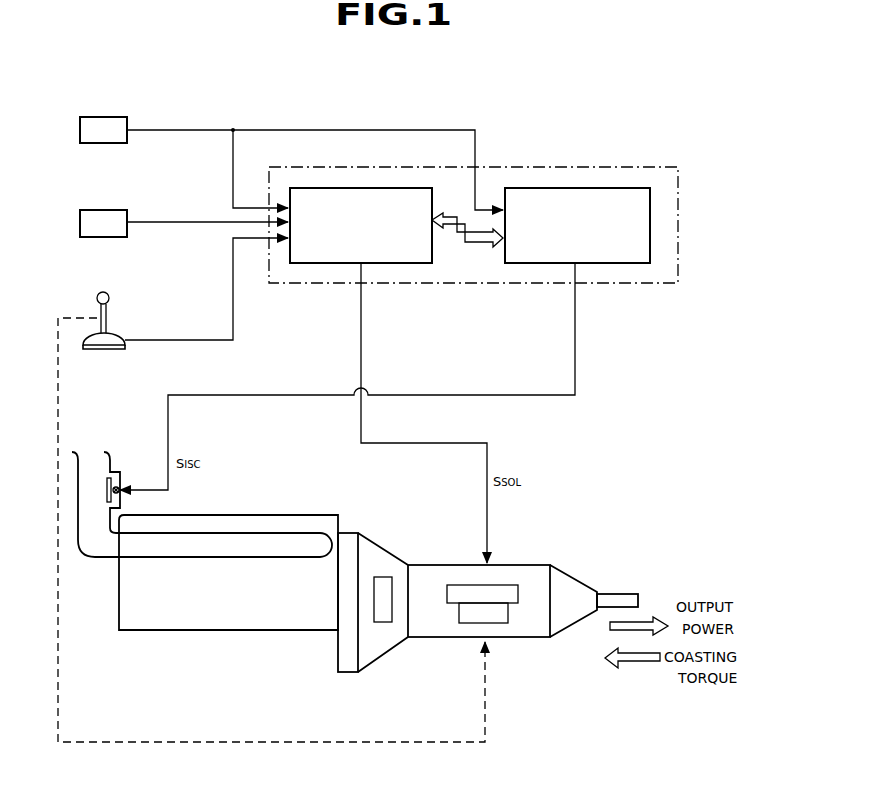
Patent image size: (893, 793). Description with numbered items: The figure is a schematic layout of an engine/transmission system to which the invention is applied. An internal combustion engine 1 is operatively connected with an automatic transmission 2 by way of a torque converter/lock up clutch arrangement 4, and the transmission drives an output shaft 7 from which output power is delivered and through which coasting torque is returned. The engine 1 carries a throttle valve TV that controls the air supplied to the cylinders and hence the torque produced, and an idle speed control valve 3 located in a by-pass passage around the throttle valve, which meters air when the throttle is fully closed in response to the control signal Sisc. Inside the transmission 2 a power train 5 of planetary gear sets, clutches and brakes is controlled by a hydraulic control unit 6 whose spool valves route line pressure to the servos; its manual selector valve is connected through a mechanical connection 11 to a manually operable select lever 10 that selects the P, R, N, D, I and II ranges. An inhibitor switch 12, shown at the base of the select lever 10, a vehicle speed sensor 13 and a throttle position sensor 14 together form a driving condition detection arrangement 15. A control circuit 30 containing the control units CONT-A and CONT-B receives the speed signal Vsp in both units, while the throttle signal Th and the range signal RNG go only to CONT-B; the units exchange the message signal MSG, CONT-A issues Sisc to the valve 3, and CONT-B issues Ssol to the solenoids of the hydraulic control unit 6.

The internal combustion engine 1 is at (225, 630).
The automatic transmission 2 is at (525, 640).
The idle speed control (ISC) valve 3 is at (122, 483).
The torque converter/lock up clutch arrangement 4 is at (388, 624).
The power train 5 is at (447, 596).
The hydraulic control unit 6 is at (508, 612).
The output shaft 7 is at (616, 592).
The select lever 10 is at (109, 313).
The mechanical connection 11 is at (58, 425).
The inhibitor switch 12 is at (112, 350).
The vehicle speed sensor 13 is at (80, 122).
The throttle position sensor 14 is at (80, 219).
The driving condition detection arrangement 15 is at (78, 168).
The control circuit 30 is at (568, 165).
The throttle valve TV is at (106, 501).